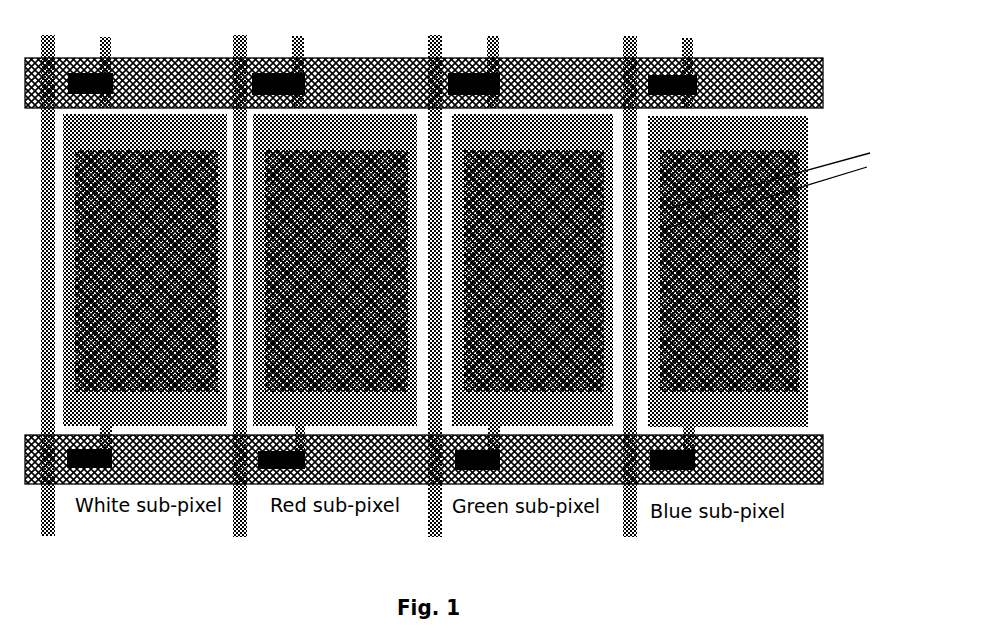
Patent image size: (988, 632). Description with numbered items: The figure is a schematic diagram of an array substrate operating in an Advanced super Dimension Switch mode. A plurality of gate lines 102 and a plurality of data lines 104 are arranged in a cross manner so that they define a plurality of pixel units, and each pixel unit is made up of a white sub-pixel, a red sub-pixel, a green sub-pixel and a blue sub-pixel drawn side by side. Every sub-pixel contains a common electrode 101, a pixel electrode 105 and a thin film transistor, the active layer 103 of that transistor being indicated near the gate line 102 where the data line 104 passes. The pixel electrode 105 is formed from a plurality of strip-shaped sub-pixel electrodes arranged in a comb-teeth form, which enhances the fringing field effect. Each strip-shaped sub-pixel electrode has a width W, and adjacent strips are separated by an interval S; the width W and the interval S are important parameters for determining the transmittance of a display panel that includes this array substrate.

The common electrode 101 is at (797, 415).
The gate line 102 is at (812, 470).
The active layer 103 is at (671, 73).
The data line 104 is at (633, 50).
The pixel electrode 105 is at (788, 350).
The interval between the strip-shaped sub-pixel electrodes S is at (722, 183).
The width of the strip-shaped sub-pixel electrode W is at (773, 191).